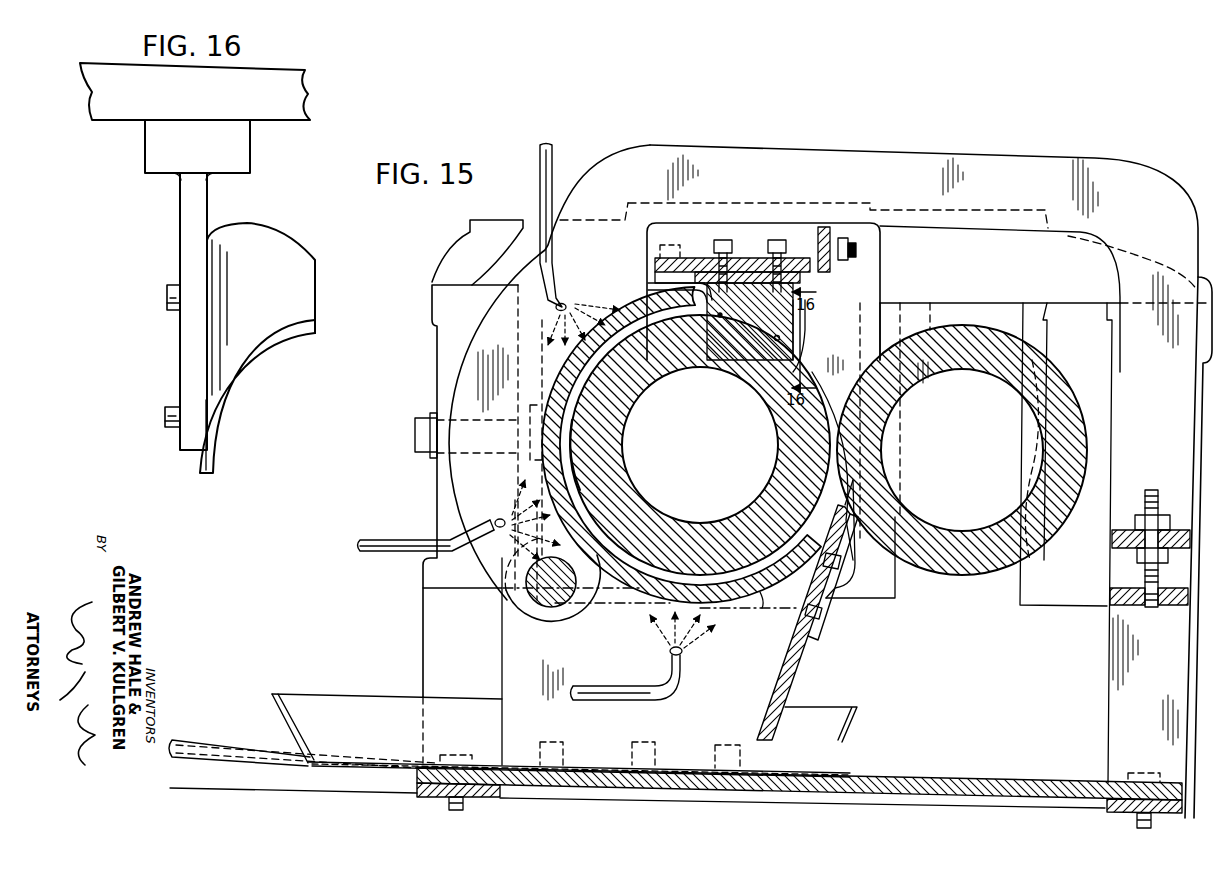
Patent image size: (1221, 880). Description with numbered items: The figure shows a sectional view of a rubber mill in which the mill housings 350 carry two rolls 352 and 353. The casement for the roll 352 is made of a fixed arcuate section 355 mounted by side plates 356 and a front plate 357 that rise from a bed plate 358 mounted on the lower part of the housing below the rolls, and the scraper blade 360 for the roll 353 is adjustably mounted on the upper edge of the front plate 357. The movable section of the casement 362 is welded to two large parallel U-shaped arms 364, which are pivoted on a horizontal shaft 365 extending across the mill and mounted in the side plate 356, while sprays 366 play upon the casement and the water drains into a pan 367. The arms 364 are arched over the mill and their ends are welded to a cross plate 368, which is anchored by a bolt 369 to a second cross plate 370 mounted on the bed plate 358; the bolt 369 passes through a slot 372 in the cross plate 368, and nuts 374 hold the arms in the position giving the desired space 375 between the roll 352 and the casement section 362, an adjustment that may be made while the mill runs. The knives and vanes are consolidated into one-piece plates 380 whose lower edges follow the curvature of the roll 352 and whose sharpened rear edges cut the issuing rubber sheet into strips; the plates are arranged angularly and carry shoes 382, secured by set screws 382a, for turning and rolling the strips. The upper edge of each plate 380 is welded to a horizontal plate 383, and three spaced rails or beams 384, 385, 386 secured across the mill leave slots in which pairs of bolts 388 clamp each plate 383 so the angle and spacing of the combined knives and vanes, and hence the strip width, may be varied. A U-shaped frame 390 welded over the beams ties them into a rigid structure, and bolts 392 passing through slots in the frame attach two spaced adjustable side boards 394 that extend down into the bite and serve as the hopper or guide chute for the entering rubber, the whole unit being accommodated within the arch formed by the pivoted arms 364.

In FIG. 15, the mill housings 350 is at (1015, 294).
In FIG. 15, the roll 352 is at (778, 465).
In FIG. 15, the roll 353 is at (1032, 416).
In FIG. 15, the fixed arcuate section 355 is at (760, 596).
In FIG. 15, the side plates 356 is at (770, 663).
In FIG. 15, the front plate 357 is at (790, 680).
In FIG. 15, the bed plate 358 is at (915, 775).
In FIG. 15, the scraper blade 360 is at (840, 584).
In FIG. 15, the movable section of the casement 362 is at (571, 427).
In FIG. 15, the U-shaped arms 364 is at (978, 158).
In FIG. 15, the horizontal shaft 365 is at (549, 597).
In FIG. 15, the sprays 366 is at (538, 192).
In FIG. 15, the pan 367 is at (852, 730).
In FIG. 15, the cross plate 368 is at (1112, 539).
In FIG. 15, the bolt 369 is at (1135, 565).
In FIG. 15, the second cross plate 370 is at (1110, 598).
In FIG. 15, the slot 372 is at (1132, 522).
In FIG. 15, the nuts 374 is at (1157, 515).
In FIG. 15, the space 375 is at (572, 470).
In FIG. 16, the plates 380 is at (209, 205).
In FIG. 15, the plates 380 is at (650, 287).
In FIG. 16, the shoes 382 is at (317, 305).
In FIG. 15, the shoes 382 is at (805, 338).
In FIG. 16, the set screws 382a is at (166, 297).
In FIG. 15, the set screws 382a is at (772, 342).
In FIG. 16, the horizontal plate 383 is at (252, 152).
In FIG. 15, the rail or beam 384 is at (690, 258).
In FIG. 15, the rail or beam 385 is at (745, 272).
In FIG. 16, the rail or beam 386 is at (312, 88).
In FIG. 15, the rail or beam 386 is at (822, 227).
In FIG. 15, the bolts 388 is at (723, 240).
In FIG. 15, the U-shaped frame 390 is at (850, 243).
In FIG. 15, the bolts 392 is at (848, 230).
In FIG. 15, the side boards 394 is at (882, 280).